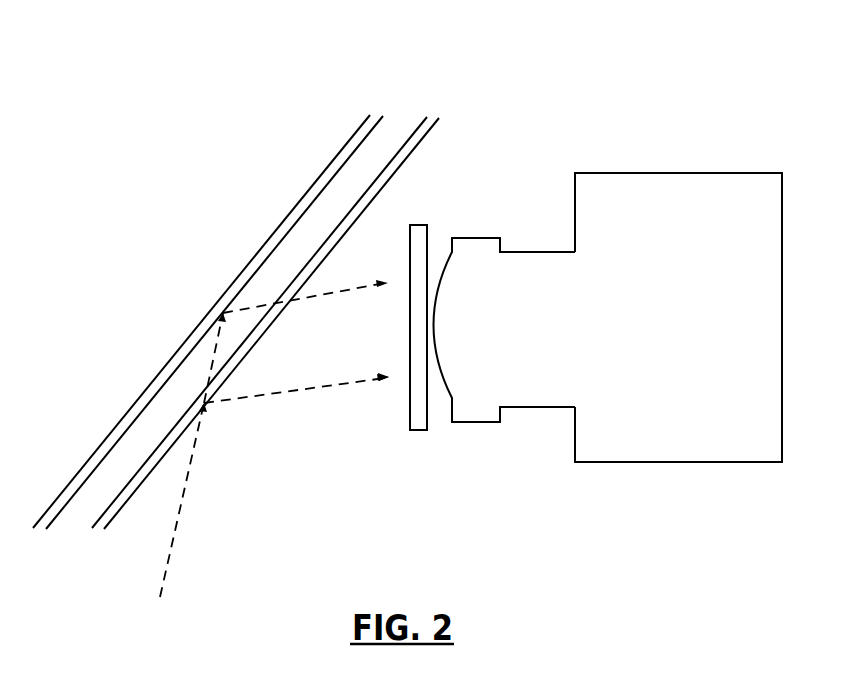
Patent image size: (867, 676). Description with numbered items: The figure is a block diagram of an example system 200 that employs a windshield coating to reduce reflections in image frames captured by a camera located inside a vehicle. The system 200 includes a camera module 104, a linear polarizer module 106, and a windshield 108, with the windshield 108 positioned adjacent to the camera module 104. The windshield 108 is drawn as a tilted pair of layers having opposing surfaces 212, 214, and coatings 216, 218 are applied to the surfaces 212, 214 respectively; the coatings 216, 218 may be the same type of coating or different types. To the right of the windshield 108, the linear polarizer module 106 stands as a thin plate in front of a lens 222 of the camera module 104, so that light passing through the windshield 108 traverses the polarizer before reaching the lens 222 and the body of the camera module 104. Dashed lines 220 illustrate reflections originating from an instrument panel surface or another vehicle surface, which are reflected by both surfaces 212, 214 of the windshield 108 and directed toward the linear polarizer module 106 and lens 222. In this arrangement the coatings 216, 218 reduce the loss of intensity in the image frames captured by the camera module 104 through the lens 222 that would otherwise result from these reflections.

The system 200 is at (211, 49).
The windshield 108 is at (159, 332).
The surface of windshield 212 is at (341, 158).
The coating 216 is at (272, 248).
The surface of windshield 214 is at (417, 126).
The coating 218 is at (408, 152).
The linear polarizer module 106 is at (422, 223).
The lens 222 is at (451, 329).
The camera module 104 is at (676, 171).
The dashed lines 220 is at (304, 298).